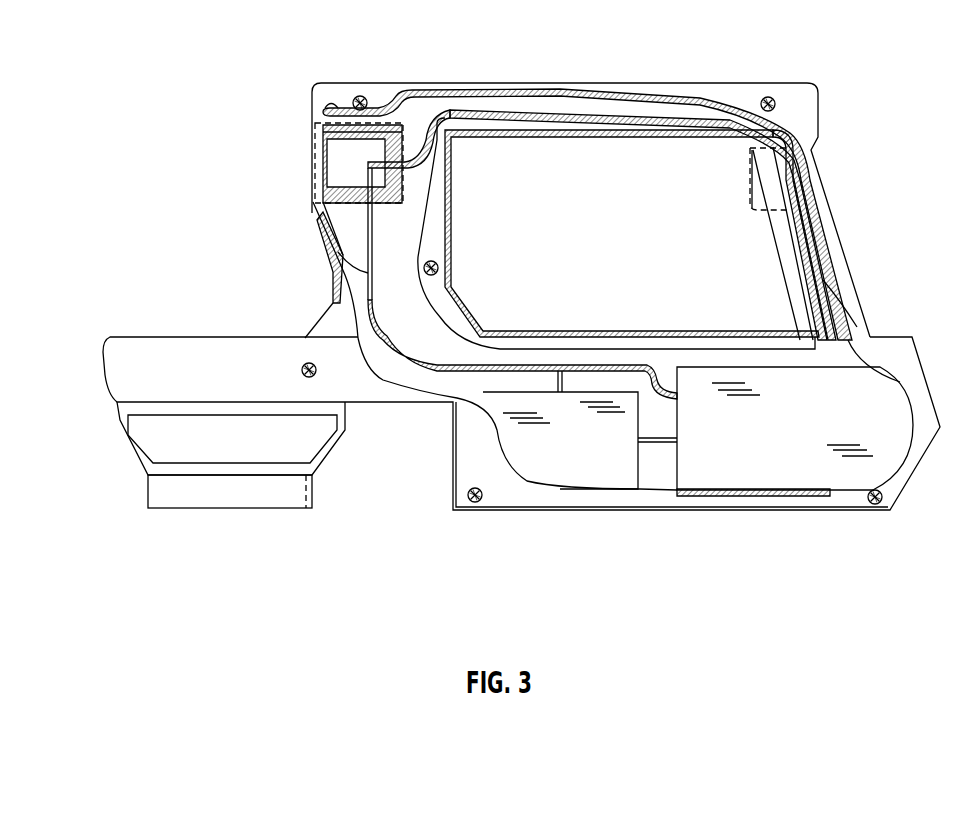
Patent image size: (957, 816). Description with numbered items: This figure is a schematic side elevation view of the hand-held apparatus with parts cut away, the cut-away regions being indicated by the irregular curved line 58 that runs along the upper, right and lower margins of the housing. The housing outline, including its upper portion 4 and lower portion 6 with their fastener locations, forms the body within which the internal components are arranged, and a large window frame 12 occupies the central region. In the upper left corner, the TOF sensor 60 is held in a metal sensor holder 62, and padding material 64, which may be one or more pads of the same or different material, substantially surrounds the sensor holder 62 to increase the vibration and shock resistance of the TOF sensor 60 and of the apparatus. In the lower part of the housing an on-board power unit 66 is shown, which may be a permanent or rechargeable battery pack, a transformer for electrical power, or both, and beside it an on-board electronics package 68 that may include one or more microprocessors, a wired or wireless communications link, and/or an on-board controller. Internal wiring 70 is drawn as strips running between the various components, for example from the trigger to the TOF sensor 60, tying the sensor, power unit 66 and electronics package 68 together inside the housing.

The housing upper portion 4 is at (733, 92).
The housing lower portion 6 is at (838, 502).
The window frame 12 is at (437, 197).
The irregular curved line 58 is at (517, 97).
The TOF sensor 60 is at (333, 158).
The sensor holder 62 is at (342, 115).
The padding material 64 is at (405, 115).
The on-board power unit 66 is at (708, 477).
The on-board electronics package 68 is at (592, 457).
The internal wiring 70 is at (623, 112).